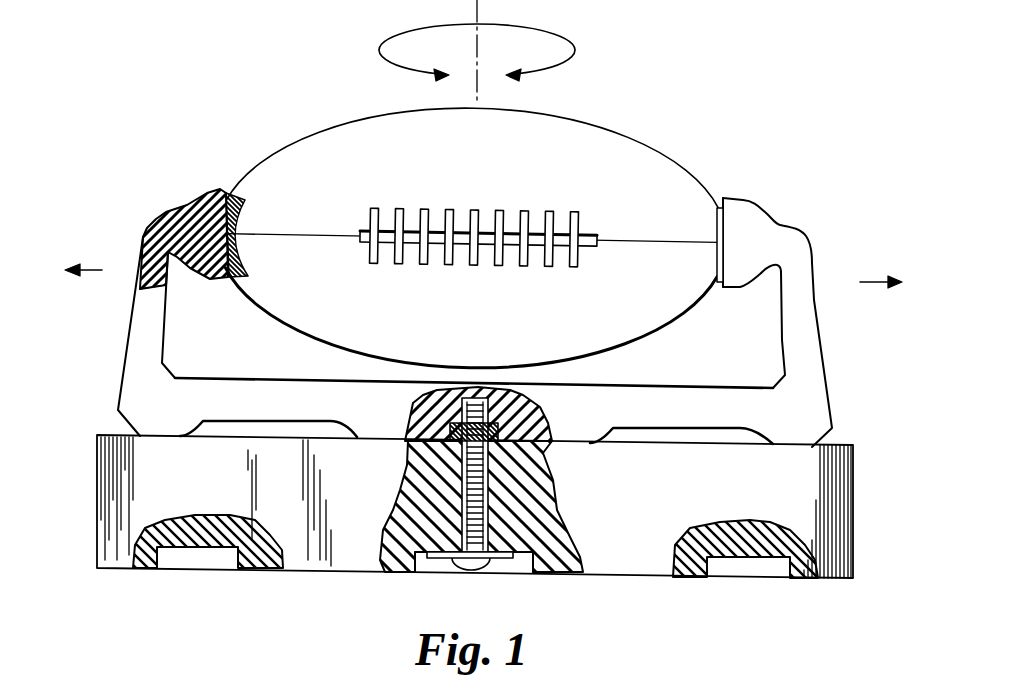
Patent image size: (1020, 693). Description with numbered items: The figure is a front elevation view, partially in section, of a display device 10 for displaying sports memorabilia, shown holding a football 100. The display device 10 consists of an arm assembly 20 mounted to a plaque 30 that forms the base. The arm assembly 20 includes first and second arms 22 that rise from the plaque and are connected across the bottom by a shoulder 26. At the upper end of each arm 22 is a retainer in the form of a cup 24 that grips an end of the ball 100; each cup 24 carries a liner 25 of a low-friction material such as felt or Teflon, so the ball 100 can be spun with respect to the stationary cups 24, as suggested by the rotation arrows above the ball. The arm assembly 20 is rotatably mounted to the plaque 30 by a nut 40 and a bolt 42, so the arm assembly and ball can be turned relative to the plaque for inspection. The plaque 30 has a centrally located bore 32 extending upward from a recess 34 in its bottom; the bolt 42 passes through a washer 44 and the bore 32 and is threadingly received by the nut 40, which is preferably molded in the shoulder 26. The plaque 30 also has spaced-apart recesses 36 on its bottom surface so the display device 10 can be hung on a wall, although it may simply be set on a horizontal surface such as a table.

The display device 10 is at (876, 387).
The arm assembly 20 is at (123, 349).
The first and second arms 22 is at (168, 331).
The cup 24 is at (186, 205).
The liner 25 is at (241, 200).
The shoulder 26 is at (670, 386).
The plaque 30 is at (853, 464).
The bore 32 is at (490, 496).
The recess 34 is at (520, 574).
The recesses 36 is at (165, 570).
The nut 40 is at (450, 432).
The bolt 42 is at (452, 486).
The washer 44 is at (432, 559).
The football 100 is at (637, 134).